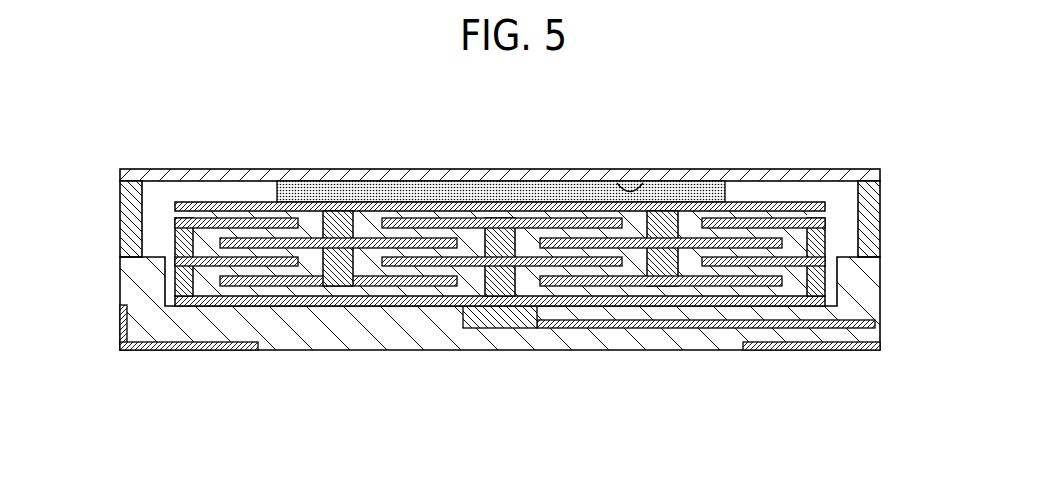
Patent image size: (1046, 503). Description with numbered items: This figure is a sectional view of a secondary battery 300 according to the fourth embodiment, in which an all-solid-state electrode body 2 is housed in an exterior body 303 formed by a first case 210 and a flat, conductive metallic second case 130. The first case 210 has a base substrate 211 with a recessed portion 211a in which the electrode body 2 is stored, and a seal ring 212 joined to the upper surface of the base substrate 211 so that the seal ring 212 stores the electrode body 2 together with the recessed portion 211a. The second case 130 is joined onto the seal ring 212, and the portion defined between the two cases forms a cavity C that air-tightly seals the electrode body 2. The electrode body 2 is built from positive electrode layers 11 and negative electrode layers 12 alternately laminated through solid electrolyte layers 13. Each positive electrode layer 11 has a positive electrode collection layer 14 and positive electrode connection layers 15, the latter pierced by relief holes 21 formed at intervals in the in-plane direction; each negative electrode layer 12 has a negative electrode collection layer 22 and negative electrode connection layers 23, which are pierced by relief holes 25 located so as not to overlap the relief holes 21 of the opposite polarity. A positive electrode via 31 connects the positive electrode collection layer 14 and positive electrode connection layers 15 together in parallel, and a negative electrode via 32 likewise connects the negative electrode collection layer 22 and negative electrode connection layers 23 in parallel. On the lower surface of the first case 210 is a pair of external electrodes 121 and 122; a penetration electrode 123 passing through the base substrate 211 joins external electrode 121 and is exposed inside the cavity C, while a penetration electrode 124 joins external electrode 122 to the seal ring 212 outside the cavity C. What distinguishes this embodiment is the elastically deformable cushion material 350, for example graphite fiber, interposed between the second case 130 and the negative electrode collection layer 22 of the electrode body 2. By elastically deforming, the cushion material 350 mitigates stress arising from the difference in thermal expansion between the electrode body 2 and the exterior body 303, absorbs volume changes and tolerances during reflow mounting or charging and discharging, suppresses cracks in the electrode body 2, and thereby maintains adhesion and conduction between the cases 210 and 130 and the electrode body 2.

The secondary battery 300 is at (884, 140).
The second case 130 is at (832, 170).
The exterior body 303 is at (105, 276).
The negative electrode layer 12 is at (762, 194).
The positive electrode layer 11 is at (476, 365).
The penetration electrode 124 is at (121, 323).
The external electrode 122 is at (149, 350).
The external electrode 121 is at (775, 350).
The penetration electrode 123 is at (648, 328).
The positive electrode via 31 is at (474, 300).
The cushion material 350 is at (557, 185).
The cavity C is at (630, 186).
The electrode body 2 is at (437, 298).
The negative electrode collection layer 22 is at (398, 205).
The positive electrode collection layer 14 is at (447, 306).
The first case 210 is at (312, 347).
The seal ring 212 is at (192, 230).
The base substrate 211 is at (338, 351).
The negative electrode connection layer 23 is at (316, 278).
The relief hole 25 is at (481, 232).
The positive electrode connection layer 15 is at (600, 228).
The negative electrode via 32 is at (678, 212).
The solid electrolyte layer 13 is at (329, 290).
The relief hole 21 is at (377, 270).
The recessed portion 211a is at (158, 270).